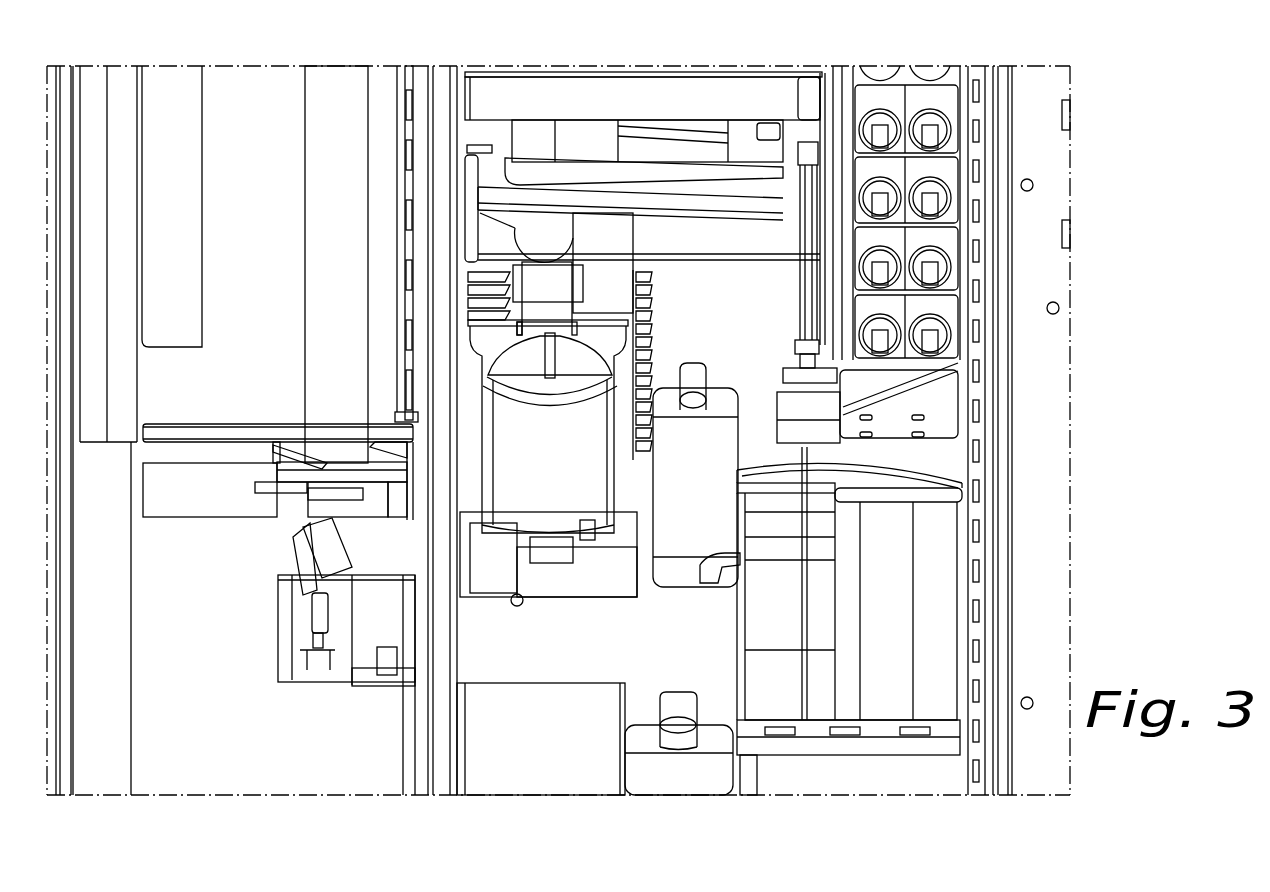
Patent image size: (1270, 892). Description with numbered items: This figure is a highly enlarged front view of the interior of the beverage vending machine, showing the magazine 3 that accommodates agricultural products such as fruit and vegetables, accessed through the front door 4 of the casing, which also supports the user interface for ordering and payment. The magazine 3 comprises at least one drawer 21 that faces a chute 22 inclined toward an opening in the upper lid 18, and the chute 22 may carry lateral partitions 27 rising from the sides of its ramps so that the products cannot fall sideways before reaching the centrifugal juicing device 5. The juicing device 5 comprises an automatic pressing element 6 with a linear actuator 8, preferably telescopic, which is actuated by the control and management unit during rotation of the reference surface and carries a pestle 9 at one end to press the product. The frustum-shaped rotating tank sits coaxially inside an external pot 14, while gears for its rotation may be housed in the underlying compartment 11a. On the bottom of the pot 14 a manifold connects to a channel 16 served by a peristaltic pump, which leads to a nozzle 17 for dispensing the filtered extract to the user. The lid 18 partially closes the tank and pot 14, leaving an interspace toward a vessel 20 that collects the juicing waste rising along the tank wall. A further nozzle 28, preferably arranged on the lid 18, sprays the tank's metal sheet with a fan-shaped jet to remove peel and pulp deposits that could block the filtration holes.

The magazine 3 is at (999, 89).
The front door 4 is at (220, 662).
The centrifugal juicing device 5 is at (942, 465).
The automatic pressing element 6 is at (775, 229).
The linear actuator 8 is at (806, 265).
The pestle 9 is at (790, 378).
The underlying compartment 11a is at (780, 643).
The external pot 14 is at (780, 547).
The channel 16 is at (720, 557).
The nozzle 17 is at (705, 577).
The upper lid 18 is at (905, 462).
The vessel 20 is at (930, 548).
The drawer 21 is at (857, 68).
The chute 22 is at (899, 396).
The lateral partitions 27 is at (847, 423).
The nozzle 28 is at (855, 450).